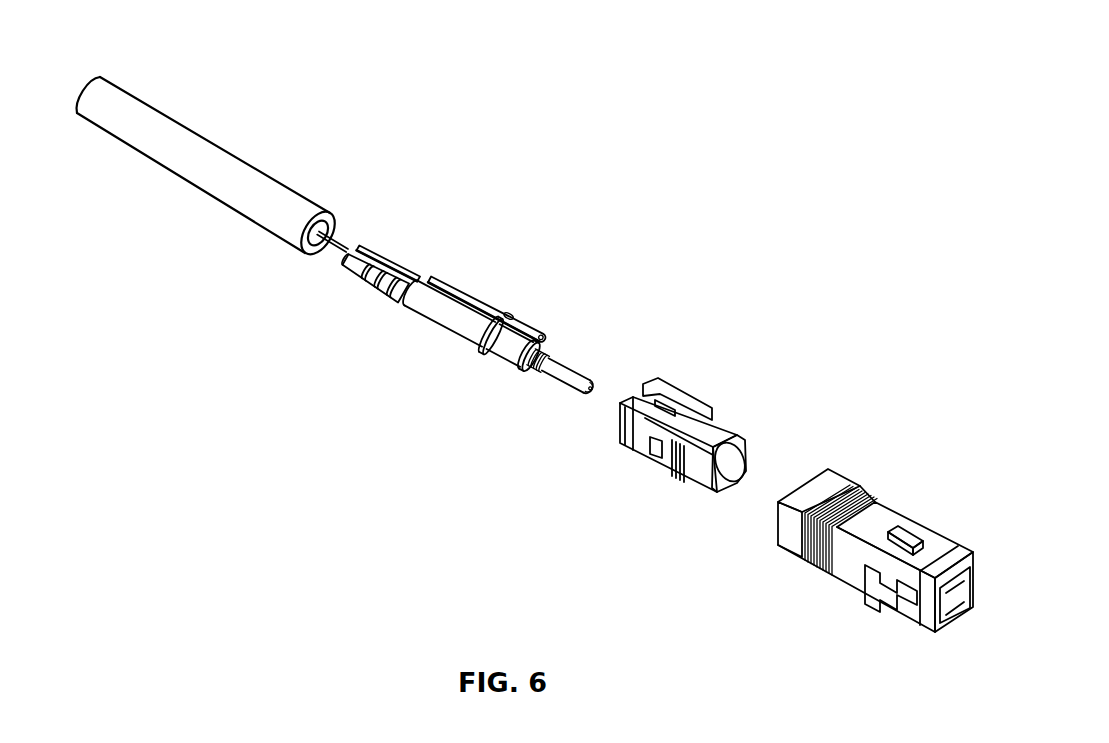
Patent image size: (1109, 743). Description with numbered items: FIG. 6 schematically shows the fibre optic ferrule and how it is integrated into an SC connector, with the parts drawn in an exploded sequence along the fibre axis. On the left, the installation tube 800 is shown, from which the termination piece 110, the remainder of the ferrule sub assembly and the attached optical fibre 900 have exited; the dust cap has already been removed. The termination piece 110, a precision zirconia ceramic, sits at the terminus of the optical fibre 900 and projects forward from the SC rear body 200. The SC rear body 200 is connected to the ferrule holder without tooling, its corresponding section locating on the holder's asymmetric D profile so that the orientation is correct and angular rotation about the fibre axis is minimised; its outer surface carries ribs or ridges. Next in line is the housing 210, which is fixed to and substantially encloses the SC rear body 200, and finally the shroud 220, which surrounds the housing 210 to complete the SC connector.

The installation tube 800 is at (217, 157).
The optical fibre 900 is at (338, 235).
The SC rear body 200 is at (443, 313).
The termination piece 110 is at (567, 363).
The housing 210 is at (708, 425).
The shroud 220 is at (935, 545).